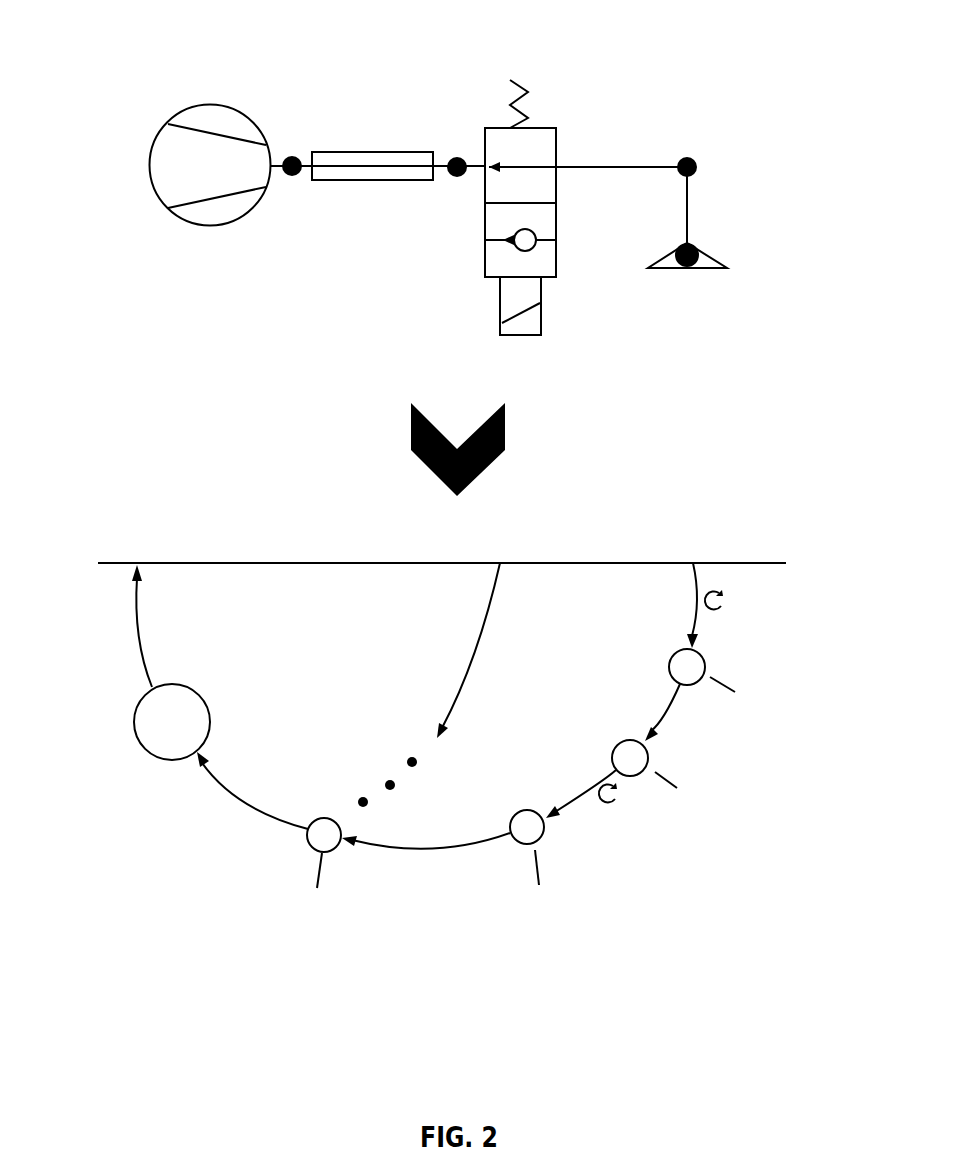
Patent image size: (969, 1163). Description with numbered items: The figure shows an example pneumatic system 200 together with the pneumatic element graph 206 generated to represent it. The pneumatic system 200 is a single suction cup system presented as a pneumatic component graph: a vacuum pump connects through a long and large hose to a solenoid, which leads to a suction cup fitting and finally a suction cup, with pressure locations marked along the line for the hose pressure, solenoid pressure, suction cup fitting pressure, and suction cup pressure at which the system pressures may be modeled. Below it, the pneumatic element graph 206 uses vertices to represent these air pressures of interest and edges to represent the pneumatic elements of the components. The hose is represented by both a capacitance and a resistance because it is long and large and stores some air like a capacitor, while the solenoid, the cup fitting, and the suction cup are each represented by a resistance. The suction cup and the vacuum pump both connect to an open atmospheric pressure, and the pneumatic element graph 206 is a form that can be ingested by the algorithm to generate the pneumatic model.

The pneumatic system 200 is at (118, 76).
The pneumatic element graph 206 is at (108, 495).